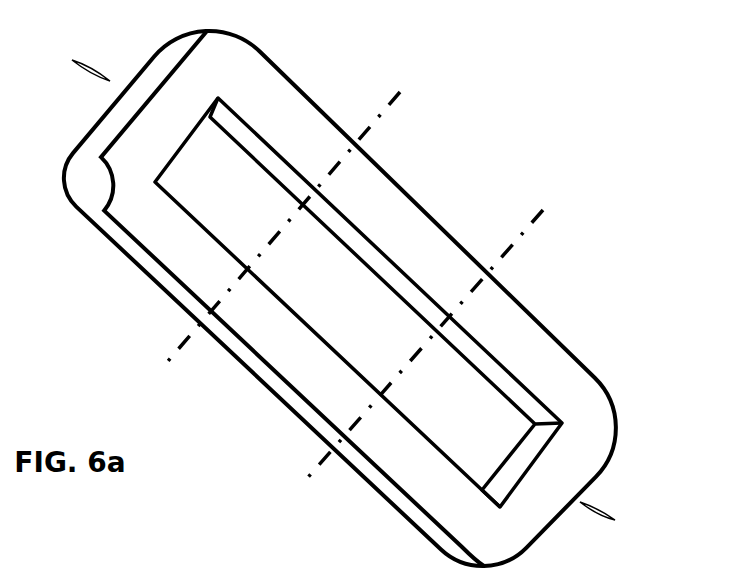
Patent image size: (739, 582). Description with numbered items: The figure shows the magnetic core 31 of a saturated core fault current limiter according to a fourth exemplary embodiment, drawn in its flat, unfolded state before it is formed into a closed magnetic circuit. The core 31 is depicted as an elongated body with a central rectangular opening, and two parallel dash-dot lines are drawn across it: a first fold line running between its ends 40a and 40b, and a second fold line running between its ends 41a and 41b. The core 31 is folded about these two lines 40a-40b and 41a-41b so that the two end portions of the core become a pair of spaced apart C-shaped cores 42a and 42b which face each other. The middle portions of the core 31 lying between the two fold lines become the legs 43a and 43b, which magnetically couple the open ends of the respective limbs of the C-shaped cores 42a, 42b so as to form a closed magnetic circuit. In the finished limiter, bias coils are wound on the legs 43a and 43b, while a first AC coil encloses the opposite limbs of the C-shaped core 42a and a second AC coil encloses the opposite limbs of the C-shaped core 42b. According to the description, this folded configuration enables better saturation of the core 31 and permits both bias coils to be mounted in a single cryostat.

The magnetic core 31 is at (604, 358).
The fold line end 40a is at (205, 317).
The fold line end 40b is at (359, 150).
The fold line end 41a is at (347, 430).
The fold line end 41b is at (498, 266).
The C-shaped core 42a is at (130, 117).
The C-shaped core 42b is at (582, 486).
The leg 43a is at (248, 360).
The leg 43b is at (412, 228).